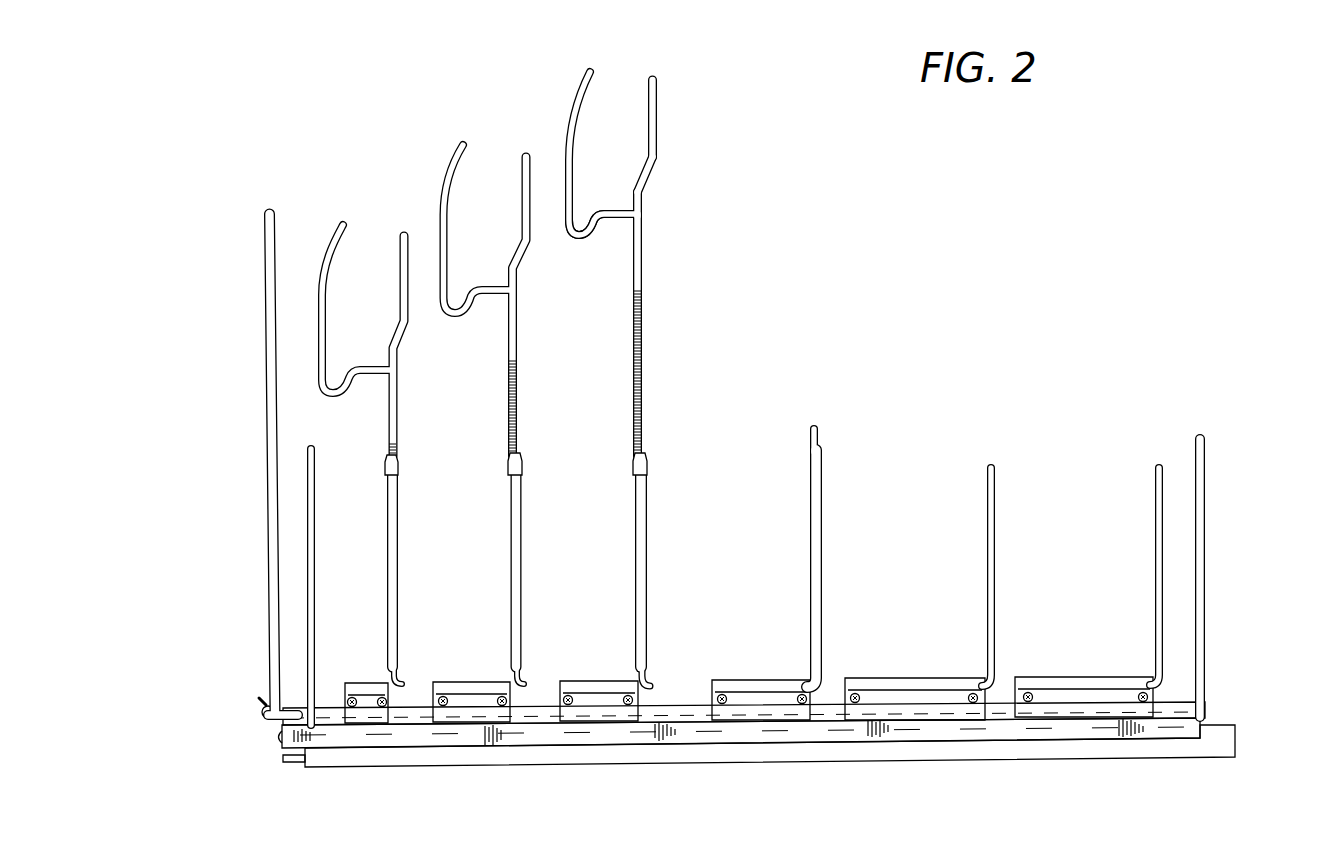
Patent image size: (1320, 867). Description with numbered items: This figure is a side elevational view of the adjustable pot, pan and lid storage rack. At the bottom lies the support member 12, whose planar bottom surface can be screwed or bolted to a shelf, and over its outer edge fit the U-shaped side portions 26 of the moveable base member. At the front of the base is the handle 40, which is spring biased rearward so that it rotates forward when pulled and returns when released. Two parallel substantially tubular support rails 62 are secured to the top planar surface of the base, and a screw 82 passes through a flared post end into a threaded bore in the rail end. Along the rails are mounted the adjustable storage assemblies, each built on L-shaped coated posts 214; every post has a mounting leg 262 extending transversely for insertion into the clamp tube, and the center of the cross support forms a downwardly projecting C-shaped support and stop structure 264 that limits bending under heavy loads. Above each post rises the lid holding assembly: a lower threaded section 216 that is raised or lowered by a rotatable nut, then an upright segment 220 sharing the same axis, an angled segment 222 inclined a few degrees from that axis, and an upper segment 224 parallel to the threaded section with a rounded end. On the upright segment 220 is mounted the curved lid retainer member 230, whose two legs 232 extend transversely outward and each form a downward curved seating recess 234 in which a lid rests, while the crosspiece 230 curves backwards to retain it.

The support member 12 is at (1227, 743).
The side portions 26 is at (795, 730).
The handle 40 is at (262, 376).
The support rails 62 is at (533, 715).
The screw 82 is at (605, 688).
The posts 214 is at (650, 570).
The lower threaded section 216 is at (647, 267).
The upright segment 220 is at (643, 202).
The angled segment 222 is at (652, 175).
The upper segment 224 is at (658, 112).
The curved lid retainer member 230 is at (577, 100).
The legs 232 is at (615, 207).
The seating recess 234 is at (583, 241).
The mounting leg 262 is at (650, 692).
The support and stop structure 264 is at (649, 463).